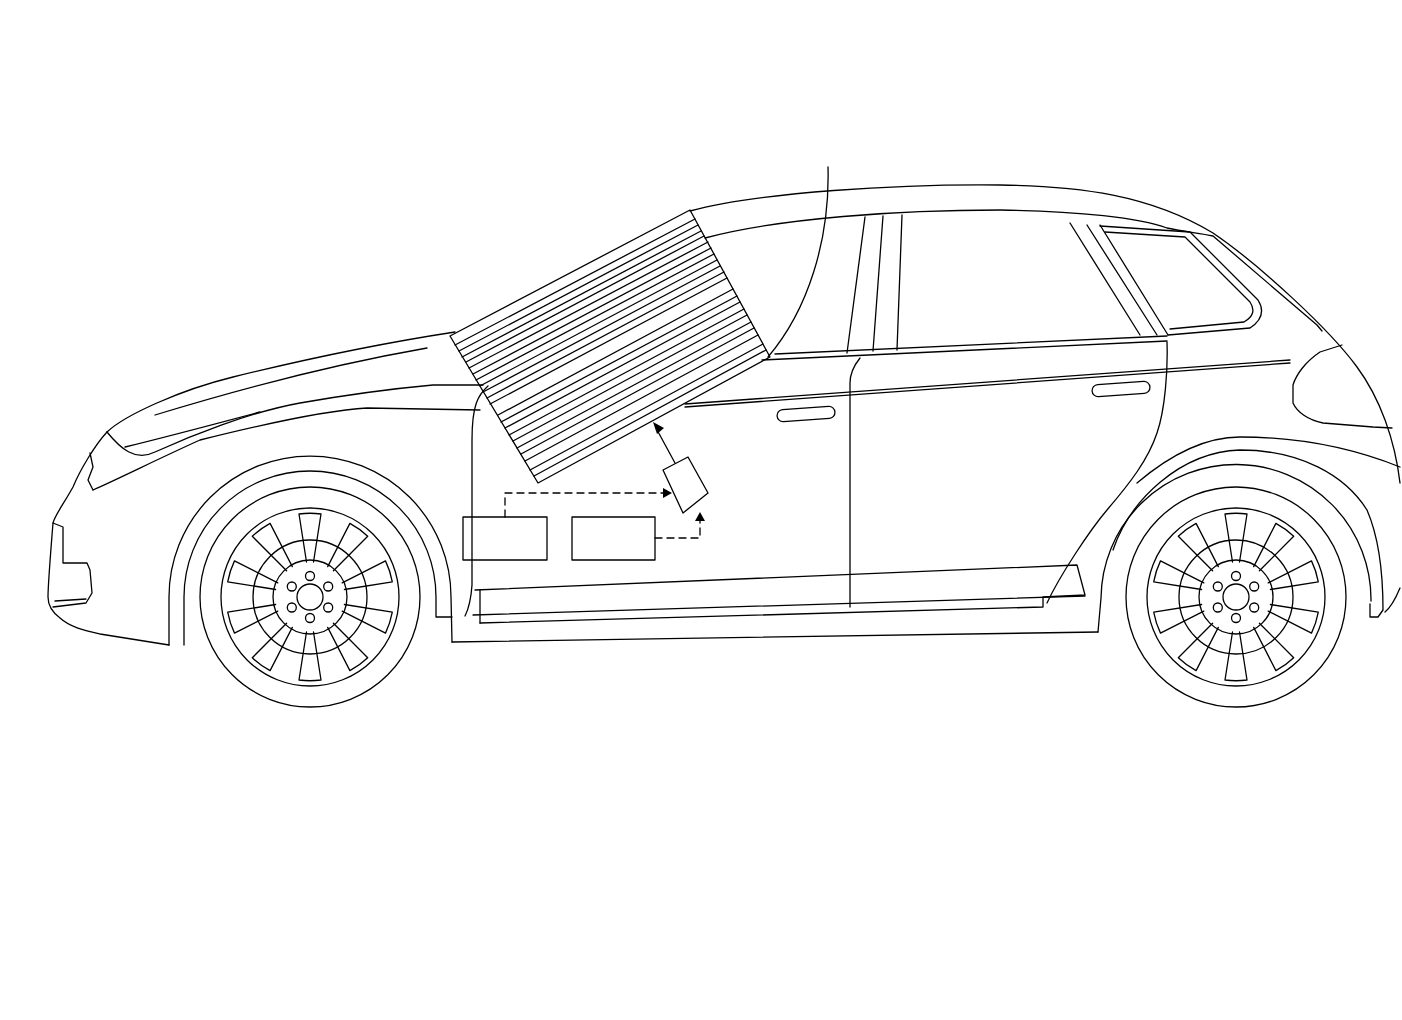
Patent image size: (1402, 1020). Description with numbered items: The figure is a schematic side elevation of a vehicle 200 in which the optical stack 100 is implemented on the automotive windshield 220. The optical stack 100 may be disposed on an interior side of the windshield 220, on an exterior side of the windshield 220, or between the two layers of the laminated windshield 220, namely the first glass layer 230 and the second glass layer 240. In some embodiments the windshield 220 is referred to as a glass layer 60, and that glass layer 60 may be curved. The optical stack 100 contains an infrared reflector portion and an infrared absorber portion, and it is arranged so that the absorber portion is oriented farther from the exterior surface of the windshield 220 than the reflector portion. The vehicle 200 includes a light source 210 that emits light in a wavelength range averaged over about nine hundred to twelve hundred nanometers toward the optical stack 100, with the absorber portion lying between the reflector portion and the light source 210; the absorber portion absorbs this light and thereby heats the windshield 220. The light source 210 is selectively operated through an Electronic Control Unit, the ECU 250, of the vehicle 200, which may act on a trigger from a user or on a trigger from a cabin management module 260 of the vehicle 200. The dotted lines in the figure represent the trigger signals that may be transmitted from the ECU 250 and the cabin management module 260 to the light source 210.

The glass layer 60 is at (583, 265).
The optical stack 100 is at (730, 262).
The vehicle 200 is at (1312, 108).
The light source 210 is at (703, 497).
The windshield 220 is at (483, 271).
The first glass layer 230 is at (652, 233).
The second glass layer 240 is at (809, 246).
The Electronic Control Unit (ECU) 250 is at (525, 556).
The cabin management module 260 is at (633, 556).